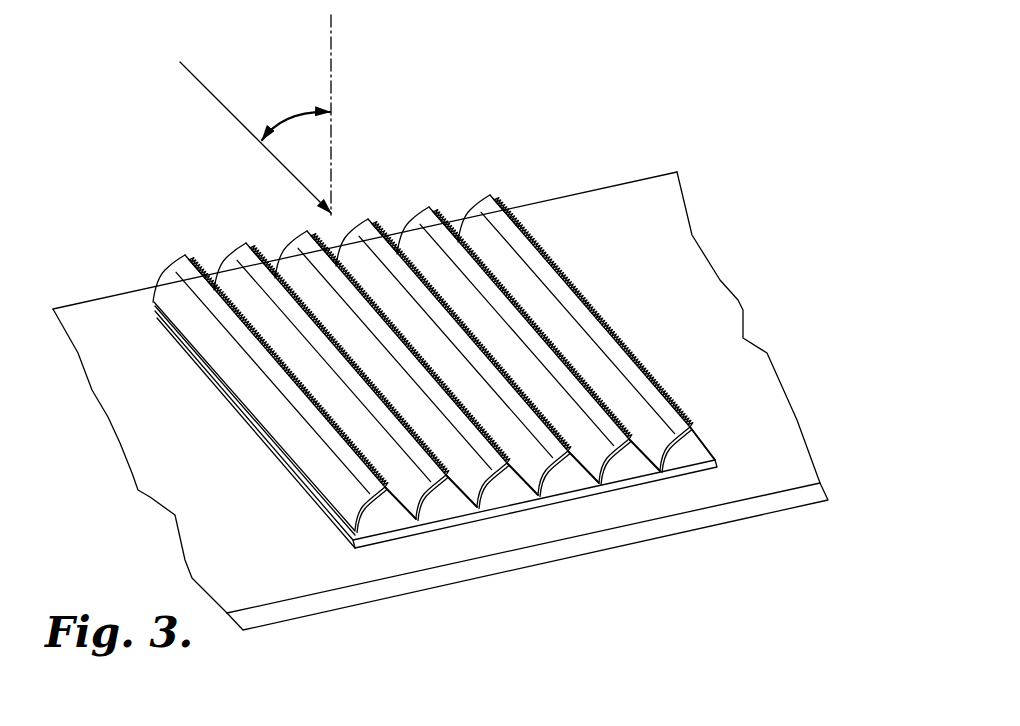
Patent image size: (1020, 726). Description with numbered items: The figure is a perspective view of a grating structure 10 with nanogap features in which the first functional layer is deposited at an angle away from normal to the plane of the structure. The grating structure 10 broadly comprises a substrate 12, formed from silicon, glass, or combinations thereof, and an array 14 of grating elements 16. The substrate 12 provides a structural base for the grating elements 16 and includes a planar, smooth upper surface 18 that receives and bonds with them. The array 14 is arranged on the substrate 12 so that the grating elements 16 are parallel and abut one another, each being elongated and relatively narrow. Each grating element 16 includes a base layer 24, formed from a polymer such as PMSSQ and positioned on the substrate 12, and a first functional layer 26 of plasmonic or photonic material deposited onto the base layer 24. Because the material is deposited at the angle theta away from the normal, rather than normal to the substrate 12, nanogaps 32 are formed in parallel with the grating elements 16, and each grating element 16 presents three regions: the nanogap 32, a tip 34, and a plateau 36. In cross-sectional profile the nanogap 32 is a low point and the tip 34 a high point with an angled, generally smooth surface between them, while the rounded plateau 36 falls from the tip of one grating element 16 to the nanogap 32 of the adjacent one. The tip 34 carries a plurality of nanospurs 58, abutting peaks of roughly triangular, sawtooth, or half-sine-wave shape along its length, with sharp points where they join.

The grating structure 10 is at (440, 322).
The substrate 12 is at (440, 376).
The array 14 is at (430, 381).
The grating element 16 is at (443, 315).
The upper surface 18 is at (633, 208).
The base layer 24 is at (570, 545).
The first functional layer 26 is at (354, 506).
The nanogap 32 is at (667, 485).
The tip 34 is at (632, 468).
The plateau 36 is at (608, 487).
The nanospur 58 is at (612, 291).